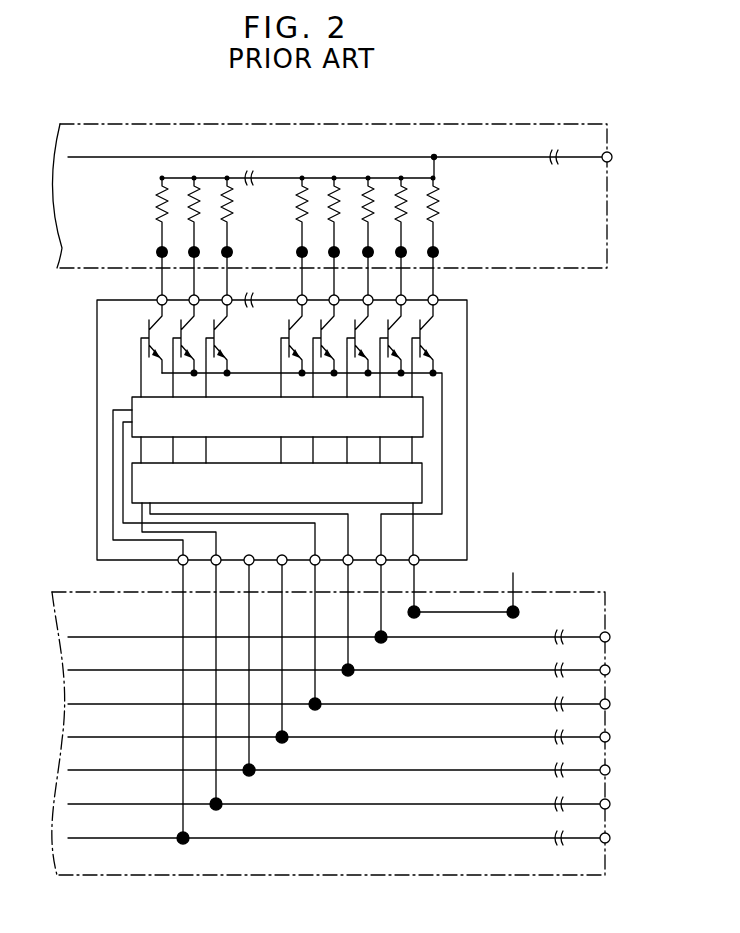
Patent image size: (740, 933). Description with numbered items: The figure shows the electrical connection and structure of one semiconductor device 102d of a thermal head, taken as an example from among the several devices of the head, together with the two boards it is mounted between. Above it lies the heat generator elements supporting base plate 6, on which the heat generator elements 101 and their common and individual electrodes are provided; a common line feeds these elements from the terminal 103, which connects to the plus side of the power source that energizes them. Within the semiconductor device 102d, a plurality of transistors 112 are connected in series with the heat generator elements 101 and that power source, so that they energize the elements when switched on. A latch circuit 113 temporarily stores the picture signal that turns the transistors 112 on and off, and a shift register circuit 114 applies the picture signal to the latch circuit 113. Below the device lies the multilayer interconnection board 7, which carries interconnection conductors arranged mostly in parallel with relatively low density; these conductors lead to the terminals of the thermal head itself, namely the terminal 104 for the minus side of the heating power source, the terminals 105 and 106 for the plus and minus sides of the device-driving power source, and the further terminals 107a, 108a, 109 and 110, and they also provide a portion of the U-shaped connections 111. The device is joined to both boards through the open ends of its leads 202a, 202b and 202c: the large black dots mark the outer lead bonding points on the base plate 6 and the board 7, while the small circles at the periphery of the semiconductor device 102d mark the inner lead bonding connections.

The heat generator elements supporting base plate 6 is at (505, 124).
The terminal 103 is at (612, 158).
The heat generator elements 101 is at (440, 212).
The lead 202a is at (450, 286).
The semiconductor device 102d is at (97, 345).
The transistors 112 is at (446, 334).
The latch circuit 113 is at (423, 412).
The shift register circuit 114 is at (422, 481).
The lead 202b is at (371, 536).
The lead 202c is at (435, 579).
The multilayer interconnection board 7 is at (604, 592).
The U-shaped connections 111 is at (513, 583).
The terminal 104 is at (629, 635).
The terminal 107a is at (629, 668).
The terminal 108a is at (629, 702).
The terminal 105 is at (611, 737).
The terminal 106 is at (611, 770).
The terminal 109 is at (611, 804).
The terminal 110 is at (611, 838).